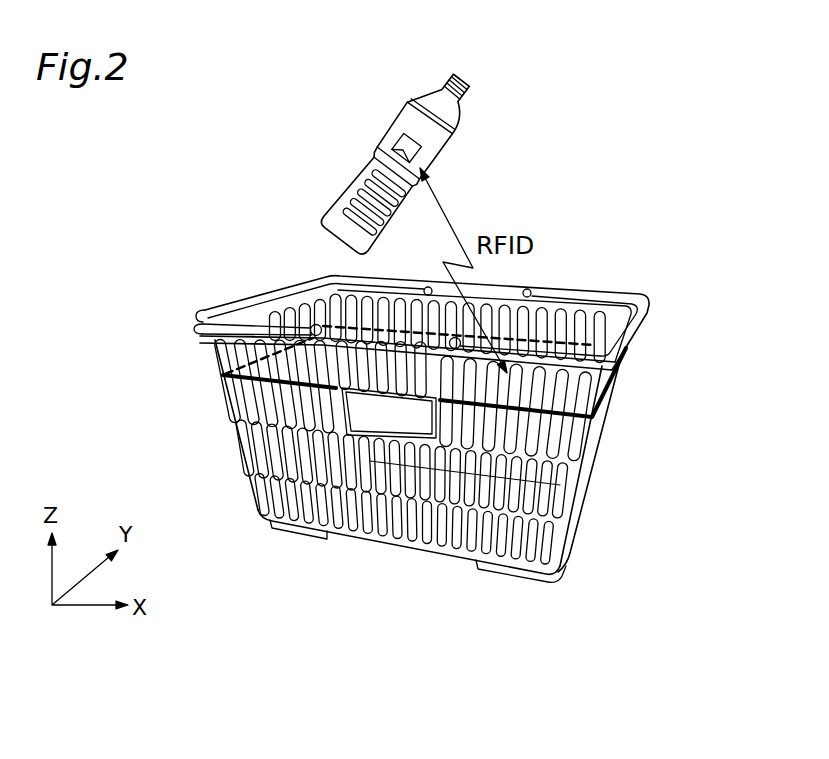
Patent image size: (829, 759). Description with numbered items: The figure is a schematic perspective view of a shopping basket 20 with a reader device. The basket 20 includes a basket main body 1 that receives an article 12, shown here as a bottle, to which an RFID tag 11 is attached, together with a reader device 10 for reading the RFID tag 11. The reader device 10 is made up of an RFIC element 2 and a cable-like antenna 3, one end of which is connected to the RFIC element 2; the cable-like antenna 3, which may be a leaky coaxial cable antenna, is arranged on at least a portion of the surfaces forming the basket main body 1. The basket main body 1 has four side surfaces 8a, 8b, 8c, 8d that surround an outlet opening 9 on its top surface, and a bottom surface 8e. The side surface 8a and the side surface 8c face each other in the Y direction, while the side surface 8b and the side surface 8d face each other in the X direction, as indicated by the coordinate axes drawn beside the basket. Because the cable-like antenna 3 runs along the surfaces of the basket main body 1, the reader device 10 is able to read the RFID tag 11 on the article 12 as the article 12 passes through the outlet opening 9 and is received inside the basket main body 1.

The basket main body 1 is at (238, 303).
The RFIC element 2 is at (393, 413).
The cable-like antenna 3 is at (615, 378).
The side surface 8a is at (477, 543).
The side surface 8b is at (604, 481).
The side surface 8c is at (626, 301).
The side surface 8d is at (256, 418).
The bottom surface 8e is at (390, 512).
The outlet opening 9 is at (561, 288).
The reader device 10 is at (718, 364).
The RFID tag 11 is at (421, 146).
The article 12 is at (343, 197).
The basket with a reader device 20 is at (716, 141).